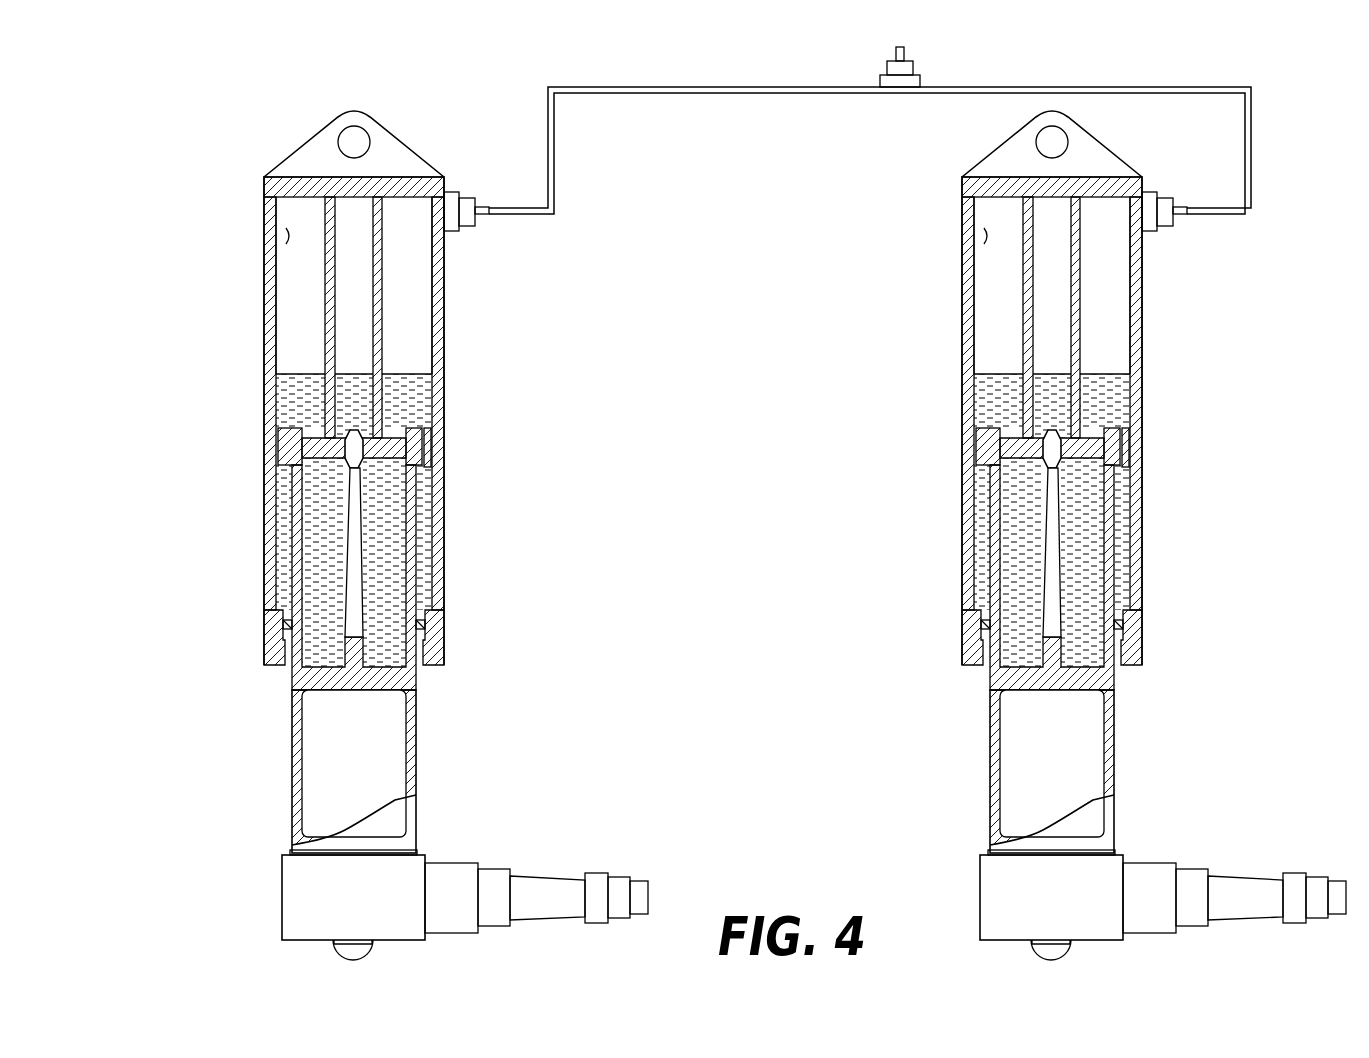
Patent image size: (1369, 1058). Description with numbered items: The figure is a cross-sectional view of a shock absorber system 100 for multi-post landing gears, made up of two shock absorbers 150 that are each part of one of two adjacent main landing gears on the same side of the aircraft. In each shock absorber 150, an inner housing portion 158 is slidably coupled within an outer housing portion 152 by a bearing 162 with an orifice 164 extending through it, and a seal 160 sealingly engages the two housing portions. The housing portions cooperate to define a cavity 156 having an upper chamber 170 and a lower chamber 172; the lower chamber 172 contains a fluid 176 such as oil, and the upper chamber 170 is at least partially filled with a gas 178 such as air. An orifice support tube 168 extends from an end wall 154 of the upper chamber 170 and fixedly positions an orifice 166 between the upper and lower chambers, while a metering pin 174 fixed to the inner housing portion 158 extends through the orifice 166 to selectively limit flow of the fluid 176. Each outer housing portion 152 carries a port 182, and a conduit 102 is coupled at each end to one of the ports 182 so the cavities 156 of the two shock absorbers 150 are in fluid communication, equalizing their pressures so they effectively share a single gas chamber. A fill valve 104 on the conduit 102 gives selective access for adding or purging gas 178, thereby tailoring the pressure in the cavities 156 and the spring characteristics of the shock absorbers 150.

The shock absorber system 100 is at (172, 92).
The conduit 102 is at (645, 87).
The fill valve 104 is at (916, 63).
The shock absorber 150 is at (422, 134).
The outer housing portion 152 is at (444, 580).
The end wall 154 is at (395, 198).
The cavity 156 is at (293, 306).
The inner housing portion 158 is at (417, 735).
The seal 160 is at (425, 625).
The bearing 162 is at (418, 428).
The orifice 164 is at (427, 442).
The orifice 166 is at (345, 430).
The orifice support tube 168 is at (385, 292).
The upper chamber 170 is at (293, 342).
The lower chamber 172 is at (314, 594).
The metering pin 174 is at (360, 544).
The fluid 176 is at (313, 532).
The gas 178 is at (287, 238).
The port 182 is at (476, 227).